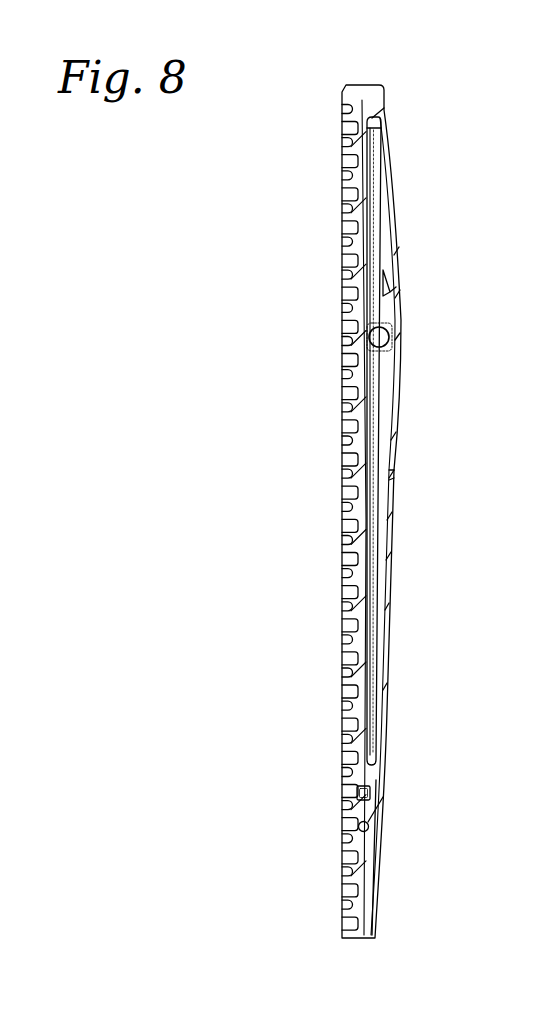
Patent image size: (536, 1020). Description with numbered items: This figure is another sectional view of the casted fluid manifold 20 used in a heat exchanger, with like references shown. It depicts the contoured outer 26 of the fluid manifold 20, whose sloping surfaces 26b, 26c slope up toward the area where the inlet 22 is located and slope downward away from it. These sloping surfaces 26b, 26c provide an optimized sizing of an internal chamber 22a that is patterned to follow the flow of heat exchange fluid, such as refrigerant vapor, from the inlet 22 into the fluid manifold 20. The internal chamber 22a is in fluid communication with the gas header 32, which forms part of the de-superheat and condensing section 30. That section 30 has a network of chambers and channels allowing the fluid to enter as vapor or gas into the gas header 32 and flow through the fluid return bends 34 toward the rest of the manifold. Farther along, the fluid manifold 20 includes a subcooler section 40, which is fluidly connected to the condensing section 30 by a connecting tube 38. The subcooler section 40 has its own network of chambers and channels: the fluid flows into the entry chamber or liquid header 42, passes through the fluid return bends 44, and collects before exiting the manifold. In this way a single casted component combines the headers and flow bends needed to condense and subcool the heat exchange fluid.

The fluid manifold 20 is at (245, 230).
The inlet 22 is at (383, 336).
The internal chamber 22a is at (380, 297).
The outer 26 is at (392, 164).
The sloping surface 26b is at (398, 250).
The sloping surface 26c is at (398, 470).
The de-superheat and condensing section 30 is at (290, 518).
The gas header 32 is at (348, 627).
The fluid return bends 34 is at (343, 575).
The connecting tube 38 is at (360, 825).
The subcooler section 40 is at (397, 837).
The liquid header 42 is at (347, 860).
The fluid return bends 44 is at (342, 876).